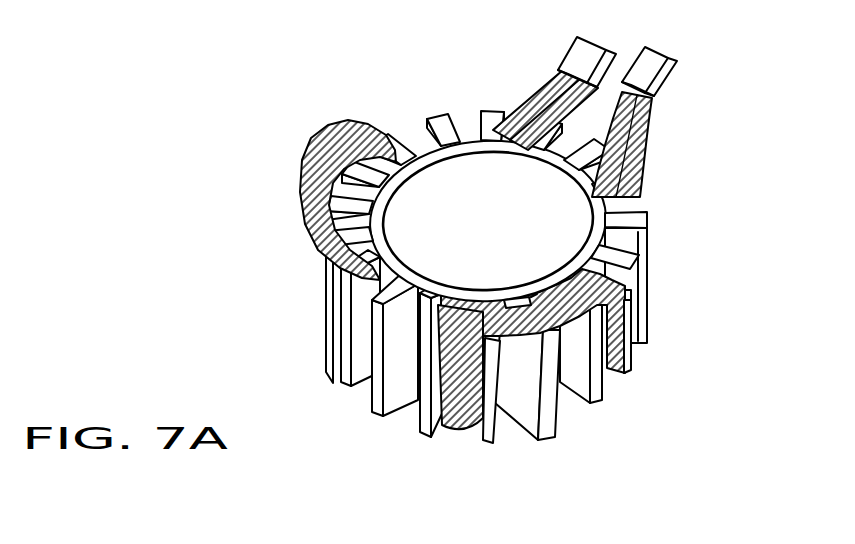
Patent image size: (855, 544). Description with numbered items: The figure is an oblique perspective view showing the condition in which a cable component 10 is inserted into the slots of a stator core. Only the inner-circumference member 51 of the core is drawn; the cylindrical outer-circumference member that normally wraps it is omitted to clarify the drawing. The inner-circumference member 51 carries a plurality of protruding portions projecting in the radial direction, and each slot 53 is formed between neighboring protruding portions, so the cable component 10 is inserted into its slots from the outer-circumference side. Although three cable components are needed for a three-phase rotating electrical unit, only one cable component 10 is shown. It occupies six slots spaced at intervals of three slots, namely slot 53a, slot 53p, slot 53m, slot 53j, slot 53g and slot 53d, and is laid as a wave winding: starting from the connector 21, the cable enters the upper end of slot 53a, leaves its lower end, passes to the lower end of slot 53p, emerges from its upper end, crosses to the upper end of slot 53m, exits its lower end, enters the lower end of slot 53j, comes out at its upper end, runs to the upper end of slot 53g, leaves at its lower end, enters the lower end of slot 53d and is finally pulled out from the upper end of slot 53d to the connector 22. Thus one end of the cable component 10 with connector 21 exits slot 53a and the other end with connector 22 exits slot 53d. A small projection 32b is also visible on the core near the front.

The cable component 10 is at (300, 187).
The connector 21 is at (573, 37).
The connector 22 is at (672, 56).
The projection 32b is at (535, 296).
The inner-circumference member 51 is at (338, 375).
The slot 53 is at (570, 415).
The slot 53a is at (520, 94).
The slot 53d is at (647, 188).
The slot 53g is at (617, 383).
The slot 53j is at (457, 440).
The slot 53m is at (330, 362).
The slot 53p is at (365, 117).